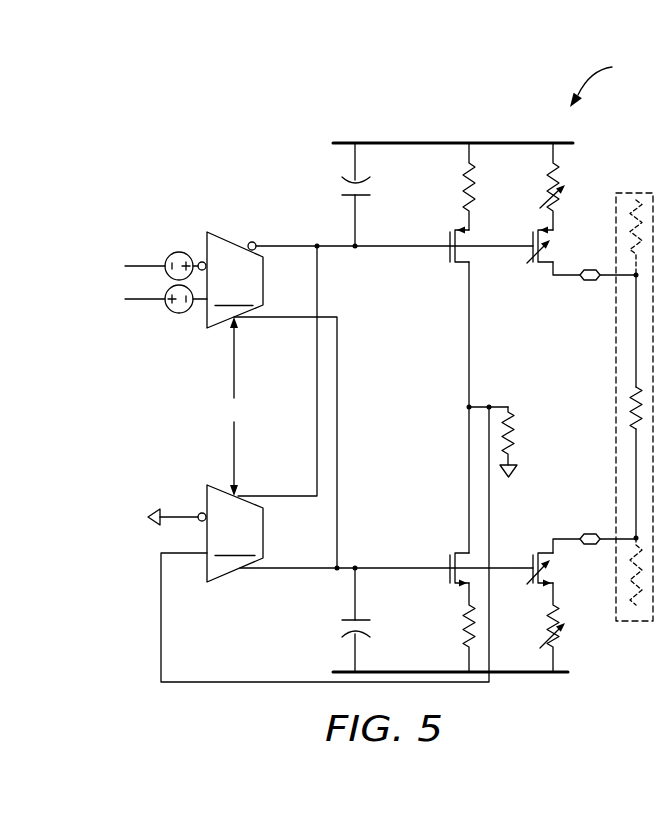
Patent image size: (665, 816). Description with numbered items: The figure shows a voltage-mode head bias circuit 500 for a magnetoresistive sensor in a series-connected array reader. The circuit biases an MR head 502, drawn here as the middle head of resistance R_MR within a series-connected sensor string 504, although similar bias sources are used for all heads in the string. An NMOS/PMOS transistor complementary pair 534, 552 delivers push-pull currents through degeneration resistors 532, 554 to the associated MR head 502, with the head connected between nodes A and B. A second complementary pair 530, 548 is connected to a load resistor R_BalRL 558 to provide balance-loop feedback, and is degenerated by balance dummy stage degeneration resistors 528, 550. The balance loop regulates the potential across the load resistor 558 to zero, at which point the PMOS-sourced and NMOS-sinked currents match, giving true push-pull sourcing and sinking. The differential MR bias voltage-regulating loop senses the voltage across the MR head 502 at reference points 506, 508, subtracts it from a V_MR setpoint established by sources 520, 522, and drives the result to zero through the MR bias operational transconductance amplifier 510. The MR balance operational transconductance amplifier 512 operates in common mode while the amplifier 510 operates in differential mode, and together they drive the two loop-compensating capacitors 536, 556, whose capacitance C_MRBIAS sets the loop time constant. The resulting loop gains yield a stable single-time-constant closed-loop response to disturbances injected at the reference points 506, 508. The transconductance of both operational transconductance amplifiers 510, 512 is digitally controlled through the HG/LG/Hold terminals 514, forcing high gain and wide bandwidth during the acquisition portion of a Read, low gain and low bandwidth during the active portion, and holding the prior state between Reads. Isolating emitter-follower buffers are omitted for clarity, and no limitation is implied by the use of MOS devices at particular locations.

The voltage-mode head bias circuit 500 is at (613, 79).
The MR head 502 is at (633, 388).
The series-connected sensor string 504 is at (628, 193).
The reference point 506 is at (141, 266).
The reference point 508 is at (141, 302).
The MR bias operational transconductance amplifier 510 is at (235, 280).
The MR balance operational transconductance amplifier 512 is at (205, 533).
The HG/LG/Hold terminals 514 is at (188, 422).
The source 520 is at (179, 251).
The source 522 is at (179, 316).
The balance dummy stage degeneration resistor 528 is at (466, 170).
The PMOS transistor 530 is at (450, 256).
The degeneration resistor 532 is at (549, 170).
The PMOS transistor 534 is at (532, 234).
The loop compensating capacitor 536 is at (364, 196).
The NMOS transistor 548 is at (450, 556).
The balance dummy stage degeneration resistor 550 is at (466, 640).
The NMOS transistor 552 is at (533, 556).
The degeneration resistor 554 is at (549, 610).
The loop compensating capacitor 556 is at (363, 620).
The load resistor R_BalRL 558 is at (511, 453).